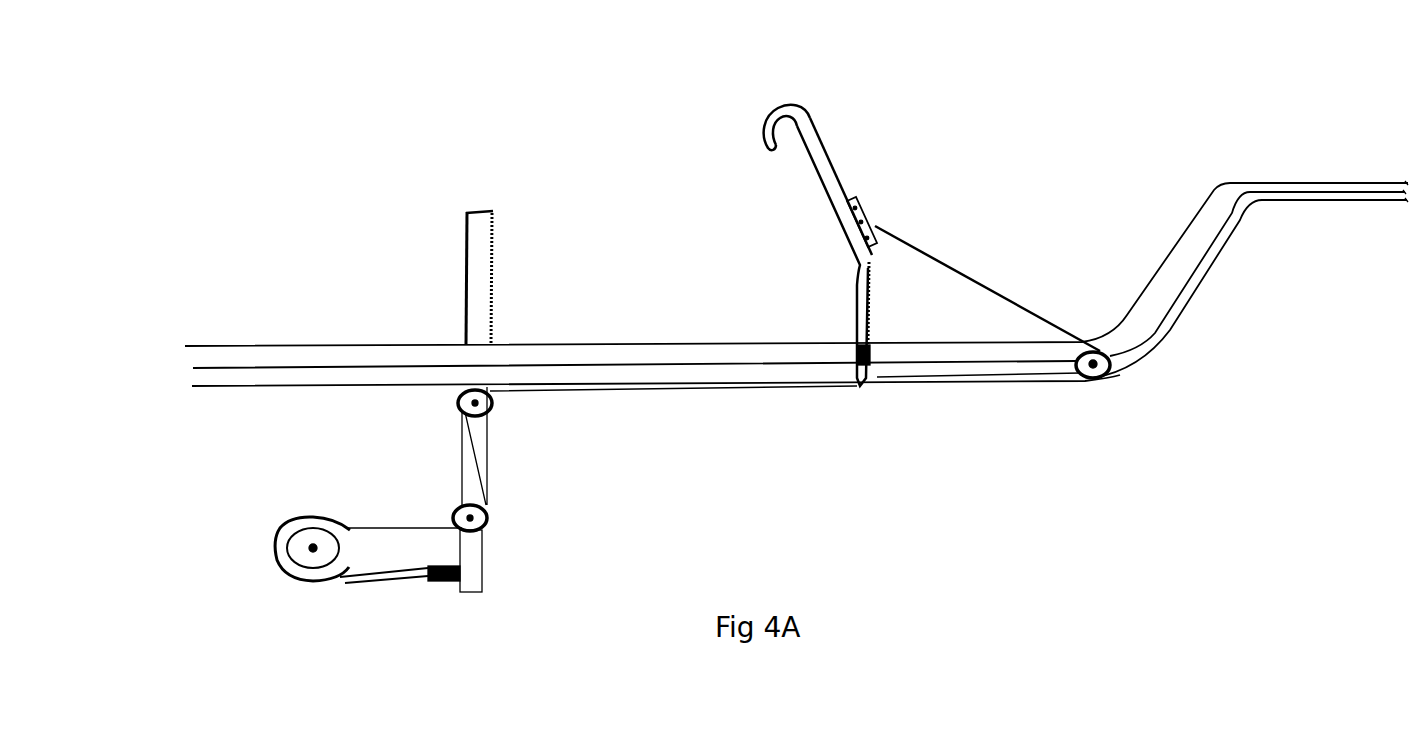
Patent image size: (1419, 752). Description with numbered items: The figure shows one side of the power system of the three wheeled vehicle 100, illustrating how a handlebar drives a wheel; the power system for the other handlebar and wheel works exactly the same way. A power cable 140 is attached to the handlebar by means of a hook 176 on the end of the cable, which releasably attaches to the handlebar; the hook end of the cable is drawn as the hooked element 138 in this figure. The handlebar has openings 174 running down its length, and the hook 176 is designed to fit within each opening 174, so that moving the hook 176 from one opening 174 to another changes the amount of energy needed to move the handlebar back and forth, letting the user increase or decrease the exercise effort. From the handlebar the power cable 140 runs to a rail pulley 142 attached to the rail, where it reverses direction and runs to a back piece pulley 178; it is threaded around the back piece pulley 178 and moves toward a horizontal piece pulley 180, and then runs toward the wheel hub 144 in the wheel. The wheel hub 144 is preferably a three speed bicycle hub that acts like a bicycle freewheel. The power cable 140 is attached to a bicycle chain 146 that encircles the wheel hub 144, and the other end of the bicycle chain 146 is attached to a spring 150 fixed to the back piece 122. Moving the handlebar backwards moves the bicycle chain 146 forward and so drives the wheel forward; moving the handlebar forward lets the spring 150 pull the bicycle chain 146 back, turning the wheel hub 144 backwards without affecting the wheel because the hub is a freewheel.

The 3 wheeled vehicle 100 is at (1217, 258).
The back piece 122 is at (493, 212).
The hook 138 is at (815, 118).
The power cable 140 is at (1028, 310).
The rail pulley 142 is at (1100, 378).
The wheel hub 144 is at (305, 538).
The bicycle chain 146 is at (350, 578).
The spring 150 is at (440, 582).
The openings 174 is at (865, 238).
The hook 176 is at (866, 204).
The back piece pulley 178 is at (490, 411).
The horizontal piece pulley 180 is at (490, 518).